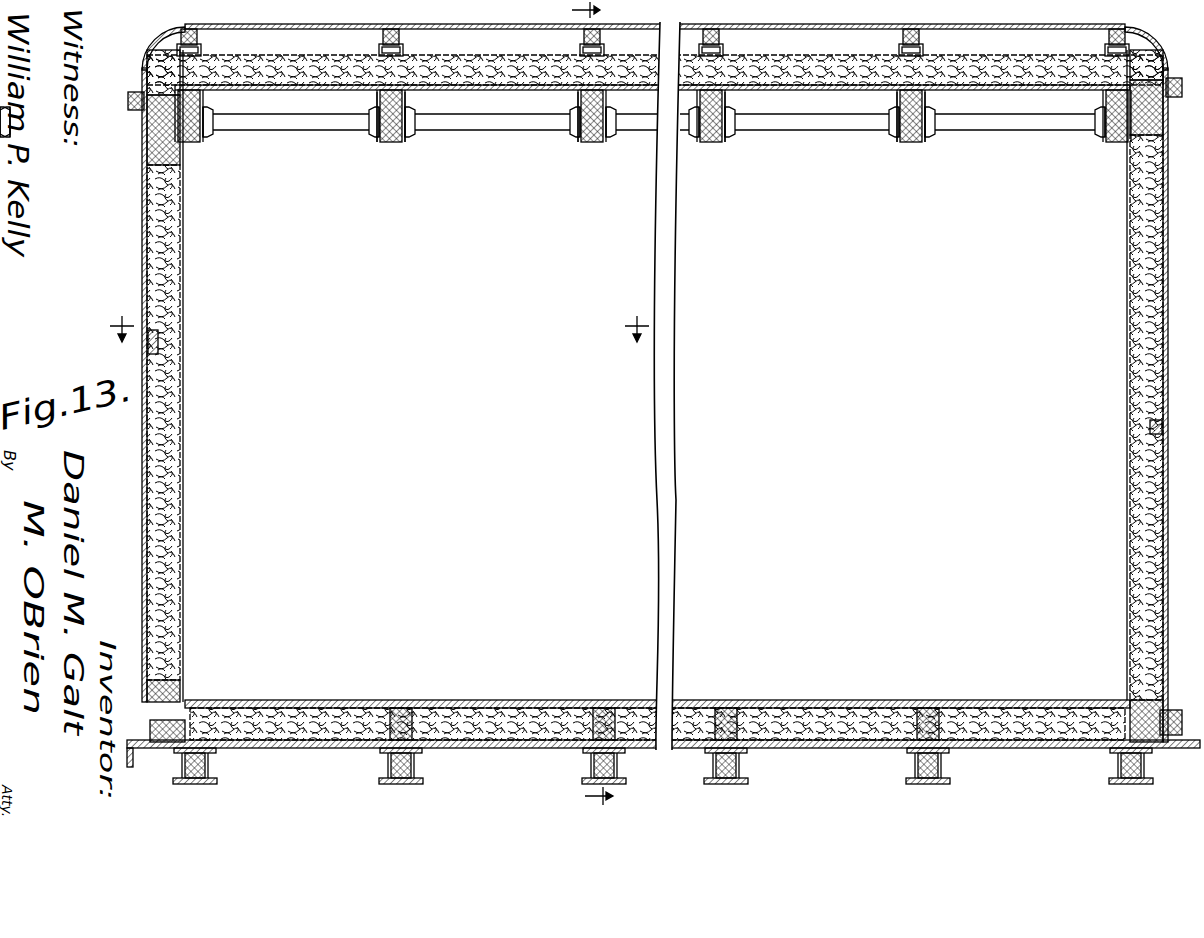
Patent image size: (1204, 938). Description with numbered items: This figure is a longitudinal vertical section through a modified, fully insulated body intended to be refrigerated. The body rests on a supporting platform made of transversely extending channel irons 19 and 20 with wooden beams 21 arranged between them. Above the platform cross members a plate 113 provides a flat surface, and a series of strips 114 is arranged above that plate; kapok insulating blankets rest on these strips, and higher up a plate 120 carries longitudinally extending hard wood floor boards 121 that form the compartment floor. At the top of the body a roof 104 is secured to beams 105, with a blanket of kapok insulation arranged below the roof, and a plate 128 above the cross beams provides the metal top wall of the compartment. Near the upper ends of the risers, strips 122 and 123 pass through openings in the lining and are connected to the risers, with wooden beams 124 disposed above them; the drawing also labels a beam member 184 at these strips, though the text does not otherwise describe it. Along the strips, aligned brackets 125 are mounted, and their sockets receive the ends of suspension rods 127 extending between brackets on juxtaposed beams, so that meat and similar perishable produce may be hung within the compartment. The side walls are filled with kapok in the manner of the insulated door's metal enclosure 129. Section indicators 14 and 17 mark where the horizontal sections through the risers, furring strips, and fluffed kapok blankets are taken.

The roof 104 is at (472, 24).
The beam 105 is at (400, 36).
The section line 17- 17 is at (596, 403).
The bracket 125 is at (415, 112).
The plate 128 is at (540, 90).
The suspension rod 127 is at (527, 122).
The strip 123 is at (377, 142).
The roof beam 184 is at (391, 143).
The strip 122 is at (404, 142).
The wooden beam 124 is at (600, 143).
The metal enclosure 129 is at (147, 268).
The section line 14- 14 is at (379, 340).
The plate 120 is at (493, 692).
The floor boards 121 is at (767, 692).
The plate 113 is at (298, 750).
The strips 114 is at (355, 750).
The channel iron 19 is at (180, 783).
The channel iron 20 is at (215, 783).
The wooden beam 21 is at (196, 784).